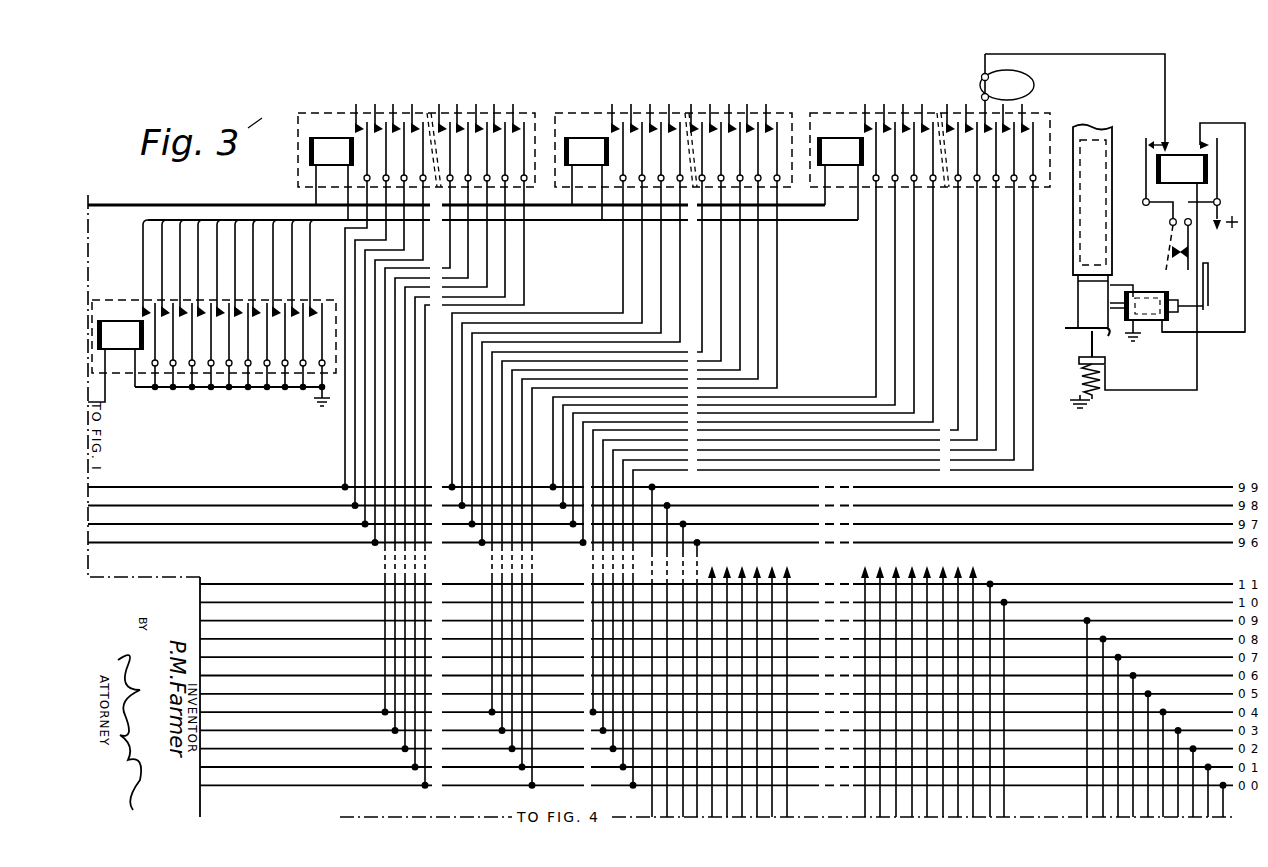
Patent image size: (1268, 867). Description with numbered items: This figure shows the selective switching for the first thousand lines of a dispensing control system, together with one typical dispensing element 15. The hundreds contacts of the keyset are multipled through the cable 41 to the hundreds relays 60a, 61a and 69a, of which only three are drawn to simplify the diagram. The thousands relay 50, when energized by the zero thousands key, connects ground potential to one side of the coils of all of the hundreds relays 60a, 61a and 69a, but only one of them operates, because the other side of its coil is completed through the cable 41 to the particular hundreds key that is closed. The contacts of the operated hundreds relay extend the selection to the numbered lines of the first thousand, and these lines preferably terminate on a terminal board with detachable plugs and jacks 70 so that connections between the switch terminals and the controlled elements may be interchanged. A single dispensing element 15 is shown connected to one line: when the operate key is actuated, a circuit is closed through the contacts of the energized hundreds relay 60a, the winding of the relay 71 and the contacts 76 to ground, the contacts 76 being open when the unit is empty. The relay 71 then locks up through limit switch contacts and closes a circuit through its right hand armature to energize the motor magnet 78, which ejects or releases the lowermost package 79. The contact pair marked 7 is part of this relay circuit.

The cable 41 is at (128, 205).
The thousands relay 50 is at (121, 305).
The hundreds relay 69a is at (320, 120).
The hundreds relay 61a is at (578, 120).
The hundreds relay 60a is at (832, 120).
The plugs and jacks 70 is at (1028, 96).
The relay 71 is at (1177, 160).
The relay contacts 7 is at (1186, 250).
The motor magnet 78 is at (1147, 292).
The lowermost package 79 is at (1085, 245).
The contacts 76 is at (1086, 356).
The dispensing element 15 is at (1187, 340).